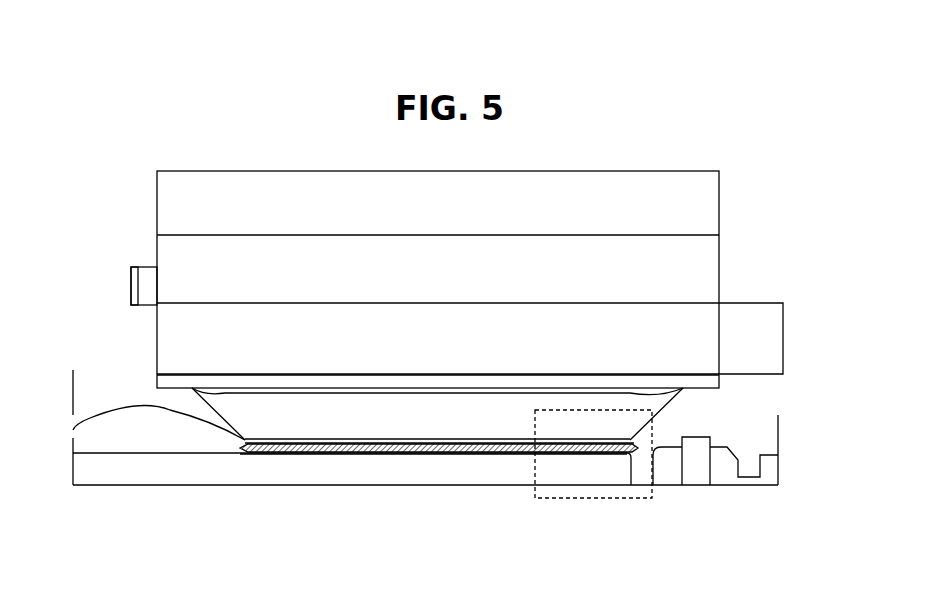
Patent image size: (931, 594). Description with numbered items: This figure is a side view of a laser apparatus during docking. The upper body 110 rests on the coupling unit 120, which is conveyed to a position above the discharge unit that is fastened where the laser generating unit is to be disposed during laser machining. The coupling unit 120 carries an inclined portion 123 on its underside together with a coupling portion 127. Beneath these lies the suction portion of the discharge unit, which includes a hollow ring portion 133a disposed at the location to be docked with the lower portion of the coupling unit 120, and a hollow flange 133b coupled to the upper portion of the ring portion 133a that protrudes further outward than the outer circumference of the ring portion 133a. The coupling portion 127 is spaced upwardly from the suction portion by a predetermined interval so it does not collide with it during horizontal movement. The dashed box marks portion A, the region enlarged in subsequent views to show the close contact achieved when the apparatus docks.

The display module 110 is at (707, 203).
The coupling unit 120 is at (743, 317).
The inclined portion 123 is at (437, 412).
The coupling portion 127 is at (294, 453).
The ring portion 133a is at (357, 447).
The flange 133b is at (245, 455).
The portion A is at (603, 498).